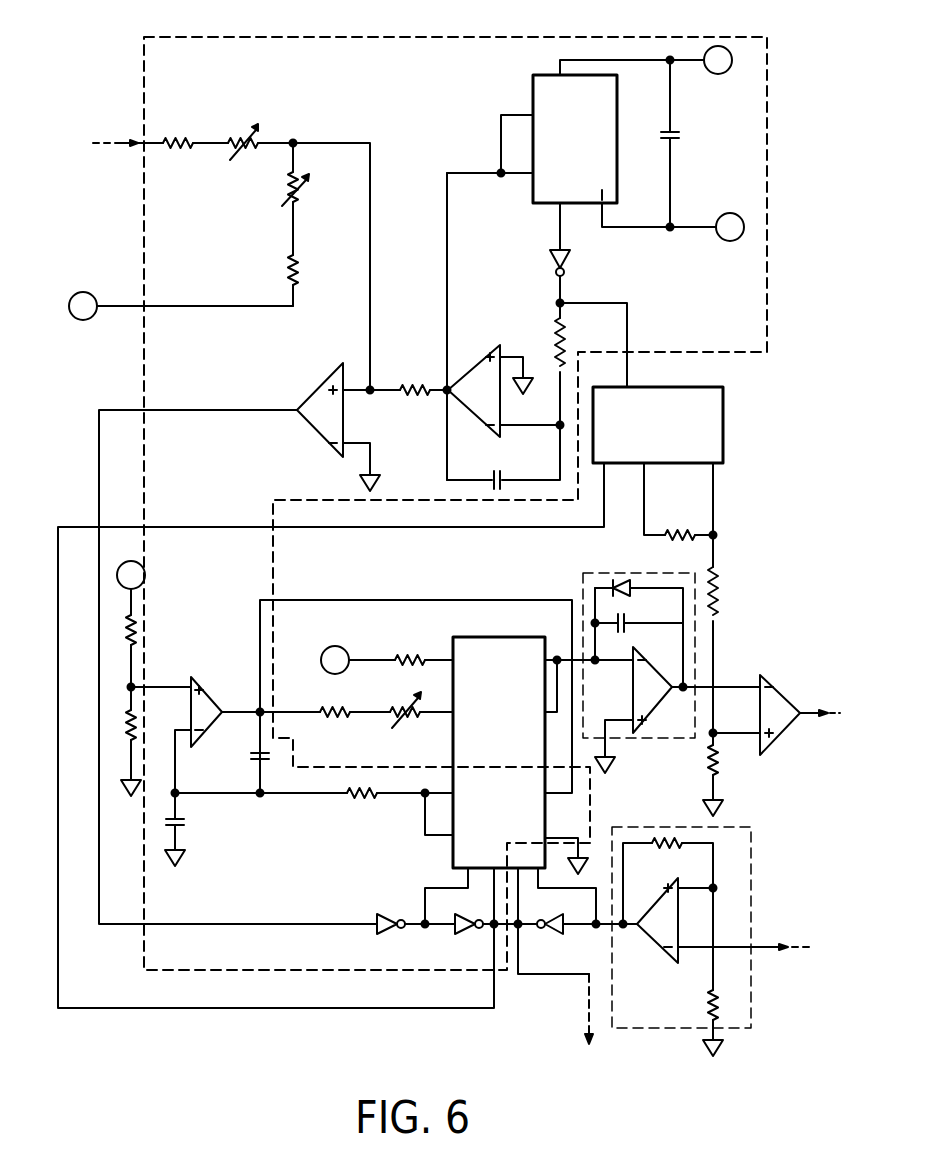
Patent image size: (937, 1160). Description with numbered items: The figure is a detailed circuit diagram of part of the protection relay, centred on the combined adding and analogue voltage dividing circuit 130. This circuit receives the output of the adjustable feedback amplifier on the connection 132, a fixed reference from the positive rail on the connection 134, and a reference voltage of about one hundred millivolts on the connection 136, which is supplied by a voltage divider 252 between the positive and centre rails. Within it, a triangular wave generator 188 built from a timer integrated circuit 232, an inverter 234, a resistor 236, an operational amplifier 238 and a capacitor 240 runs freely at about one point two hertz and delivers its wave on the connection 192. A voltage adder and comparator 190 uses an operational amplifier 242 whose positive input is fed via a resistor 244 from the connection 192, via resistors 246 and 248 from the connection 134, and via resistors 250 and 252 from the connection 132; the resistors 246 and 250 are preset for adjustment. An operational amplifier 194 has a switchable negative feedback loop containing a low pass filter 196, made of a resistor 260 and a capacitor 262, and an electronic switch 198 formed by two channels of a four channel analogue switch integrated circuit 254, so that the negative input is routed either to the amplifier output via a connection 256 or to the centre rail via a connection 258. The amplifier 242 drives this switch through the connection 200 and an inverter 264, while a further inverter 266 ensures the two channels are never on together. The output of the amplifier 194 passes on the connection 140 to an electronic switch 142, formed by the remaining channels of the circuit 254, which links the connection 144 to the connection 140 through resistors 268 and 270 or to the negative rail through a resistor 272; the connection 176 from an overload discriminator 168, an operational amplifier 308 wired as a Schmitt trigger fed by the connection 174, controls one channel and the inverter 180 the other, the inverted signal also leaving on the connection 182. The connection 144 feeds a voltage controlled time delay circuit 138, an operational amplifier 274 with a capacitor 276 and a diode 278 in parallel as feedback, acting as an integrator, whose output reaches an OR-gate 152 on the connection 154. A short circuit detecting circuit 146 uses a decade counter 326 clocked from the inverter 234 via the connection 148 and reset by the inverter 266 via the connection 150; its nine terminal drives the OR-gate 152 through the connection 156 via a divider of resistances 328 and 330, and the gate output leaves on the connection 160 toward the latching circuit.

The combined adding and analogue voltage dividing circuit 130 is at (445, 36).
The connection 132 is at (130, 150).
The connection 134 is at (128, 300).
The connection 136 is at (169, 686).
The voltage controlled time delay circuit 138 is at (698, 658).
The connection 140 is at (296, 711).
The electronic switch 142 is at (468, 697).
The connection 144 is at (598, 668).
The short circuit detecting circuit 146 is at (757, 441).
The connection 148 is at (622, 324).
The connection 150 is at (222, 529).
The OR-gate 152 is at (782, 732).
The connection 154 is at (731, 686).
The connection 156 is at (746, 740).
The connection 160 is at (790, 698).
The overload discriminator 168 is at (751, 897).
The connection 174 is at (735, 946).
The connection 176 is at (601, 927).
The inverter 180 is at (553, 933).
The connection 182 is at (548, 976).
The triangular wave generator 188 is at (473, 208).
The voltage adder and comparator 190 is at (276, 323).
The connection 192 is at (441, 402).
The operational amplifier 194 is at (215, 703).
The low pass filter 196 is at (313, 818).
The electronic switch 198 is at (488, 826).
The connection 200 is at (181, 411).
The 555N integrated circuit 232 is at (533, 82).
The inverter 234 is at (550, 261).
The resistor 236 is at (558, 338).
The operational amplifier 238 is at (479, 368).
The capacitor 240 is at (492, 474).
The operational amplifier 242 is at (326, 442).
The resistor 244 is at (426, 402).
The resistor 246 is at (303, 192).
The resistor 248 is at (300, 270).
The resistor 250 is at (246, 160).
The resistor 252 is at (178, 160).
The 4066 integrated circuit 254 is at (523, 641).
The connection 256 is at (395, 600).
The connection 258 is at (568, 838).
The resistor 260 is at (373, 808).
The capacitor 262 is at (165, 836).
The inverter 264 is at (387, 934).
The further inverter 266 is at (471, 934).
The resistor 268 is at (421, 718).
The resistor 270 is at (343, 723).
The resistor 272 is at (395, 658).
The operational amplifier 274 is at (658, 700).
The capacitor 276 is at (628, 629).
The diode 278 is at (637, 575).
The operational amplifier 308 is at (653, 942).
The decade counter 326 is at (722, 446).
The resistance 328 is at (723, 584).
The resistance 330 is at (729, 756).